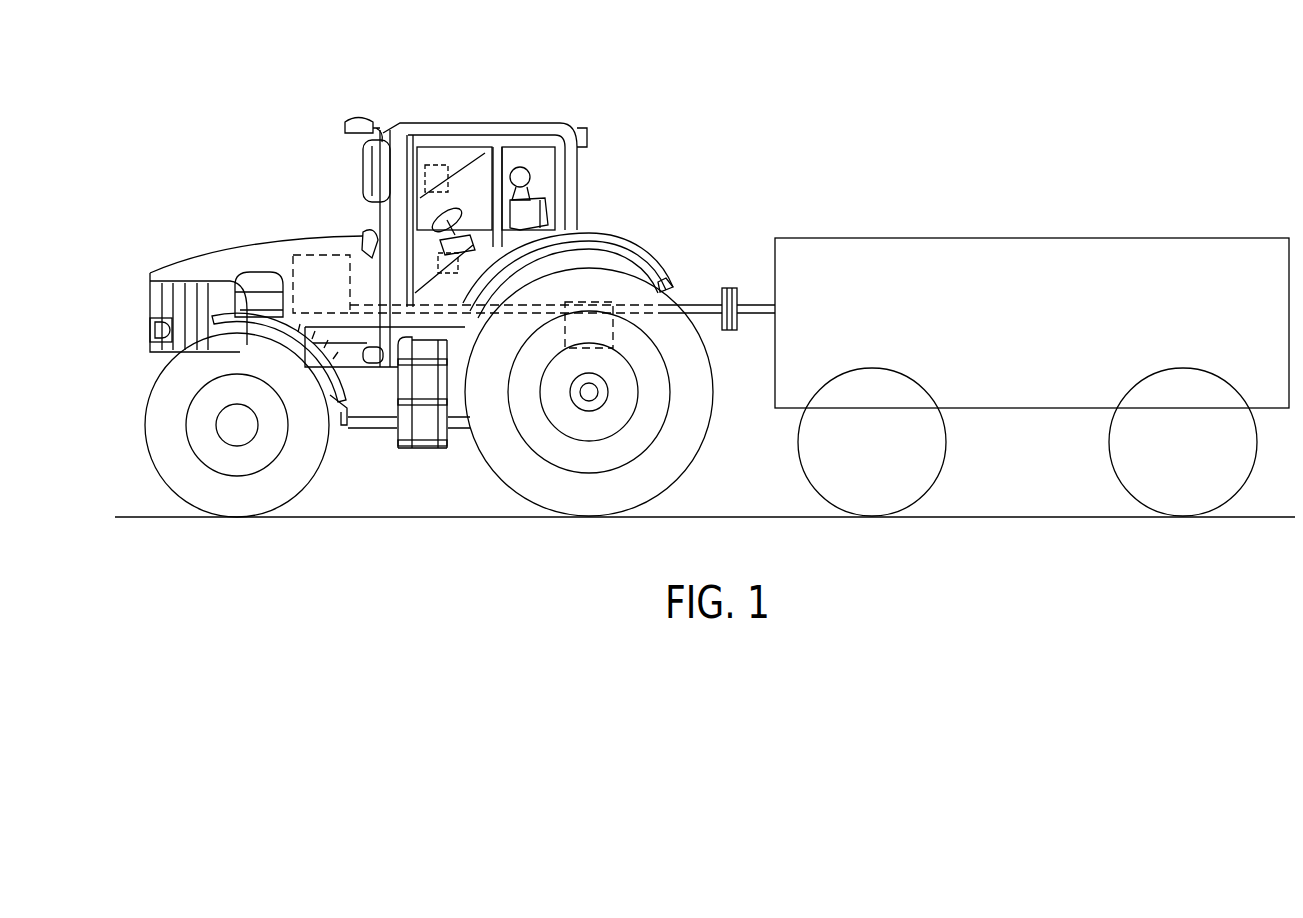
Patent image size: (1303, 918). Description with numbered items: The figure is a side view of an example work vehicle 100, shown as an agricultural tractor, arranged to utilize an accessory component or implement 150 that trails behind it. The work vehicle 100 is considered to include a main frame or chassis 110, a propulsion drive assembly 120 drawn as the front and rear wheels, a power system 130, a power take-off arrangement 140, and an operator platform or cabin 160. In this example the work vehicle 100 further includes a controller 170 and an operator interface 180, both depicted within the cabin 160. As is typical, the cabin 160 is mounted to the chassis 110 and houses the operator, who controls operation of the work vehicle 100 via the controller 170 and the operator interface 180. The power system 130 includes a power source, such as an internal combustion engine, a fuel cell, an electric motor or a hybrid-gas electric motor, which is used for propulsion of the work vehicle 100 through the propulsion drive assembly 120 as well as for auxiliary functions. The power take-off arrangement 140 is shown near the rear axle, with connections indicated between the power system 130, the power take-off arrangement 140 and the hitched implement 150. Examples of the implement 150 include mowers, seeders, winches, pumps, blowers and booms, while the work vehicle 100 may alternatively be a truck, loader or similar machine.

The work vehicle 100 is at (554, 92).
The chassis 110 is at (333, 415).
The propulsion drive assembly 120 is at (592, 392).
The power system 130 is at (318, 255).
The power take-off arrangement 140 is at (606, 300).
The implement 150 is at (860, 237).
The cabin 160 is at (434, 135).
The controller 170 is at (447, 253).
The operator interface 180 is at (447, 168).